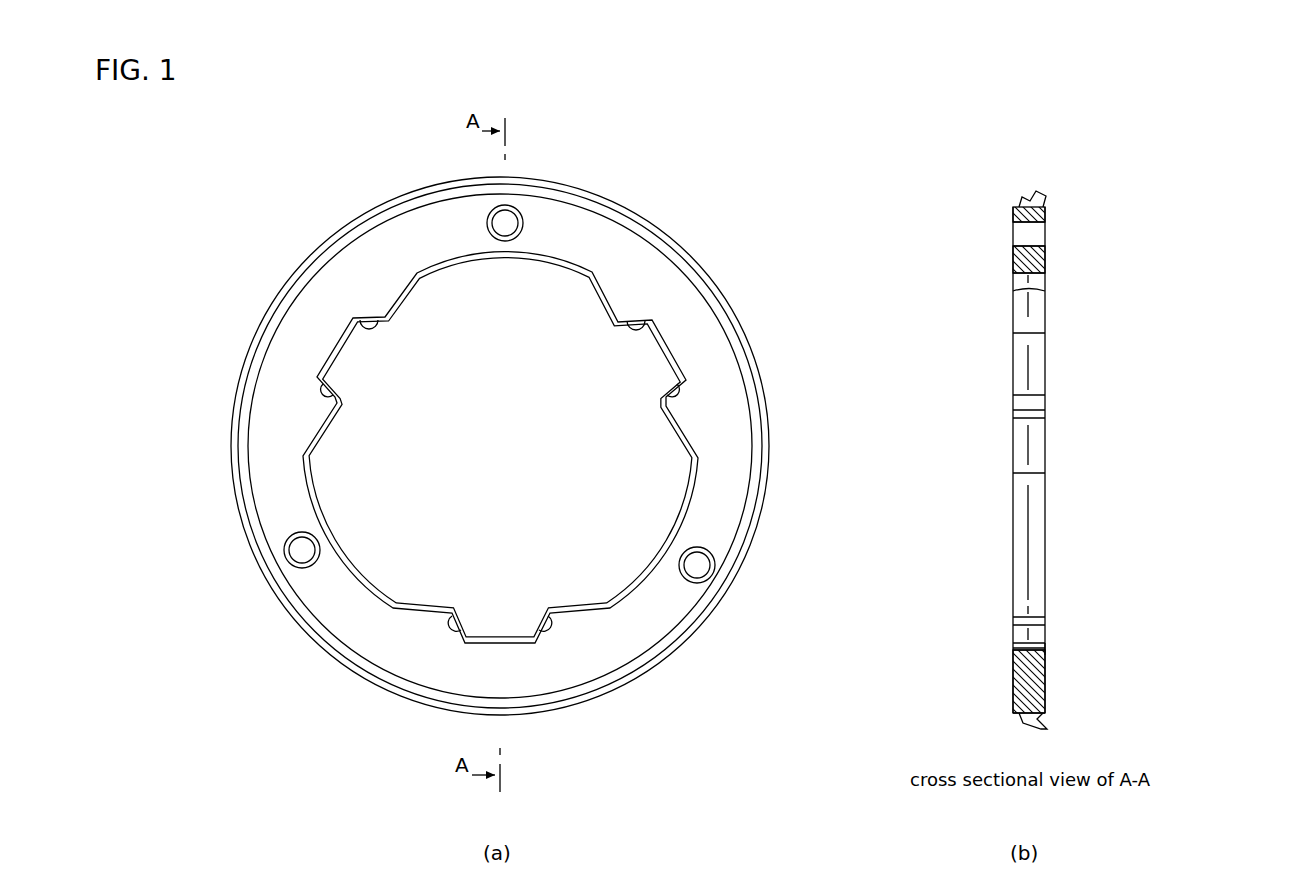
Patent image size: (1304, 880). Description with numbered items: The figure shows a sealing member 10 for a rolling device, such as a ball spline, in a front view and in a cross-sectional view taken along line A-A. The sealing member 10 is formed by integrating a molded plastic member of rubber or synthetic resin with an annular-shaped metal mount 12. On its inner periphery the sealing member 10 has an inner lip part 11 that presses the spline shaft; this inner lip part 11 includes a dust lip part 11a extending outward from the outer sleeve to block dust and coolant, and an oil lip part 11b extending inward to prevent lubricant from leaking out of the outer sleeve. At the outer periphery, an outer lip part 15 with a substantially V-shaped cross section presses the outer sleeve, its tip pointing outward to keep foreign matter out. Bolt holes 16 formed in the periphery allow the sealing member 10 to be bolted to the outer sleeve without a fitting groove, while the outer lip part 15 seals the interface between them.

The sealing member for a rolling device 10 is at (322, 178).
The inner lip part 11 is at (607, 326).
The dust lip part 11a is at (1045, 650).
The oil lip part 11b is at (1013, 648).
The metal mount 12 is at (1013, 683).
The outer lip part 15 is at (690, 243).
The bolt hole 16 is at (507, 221).